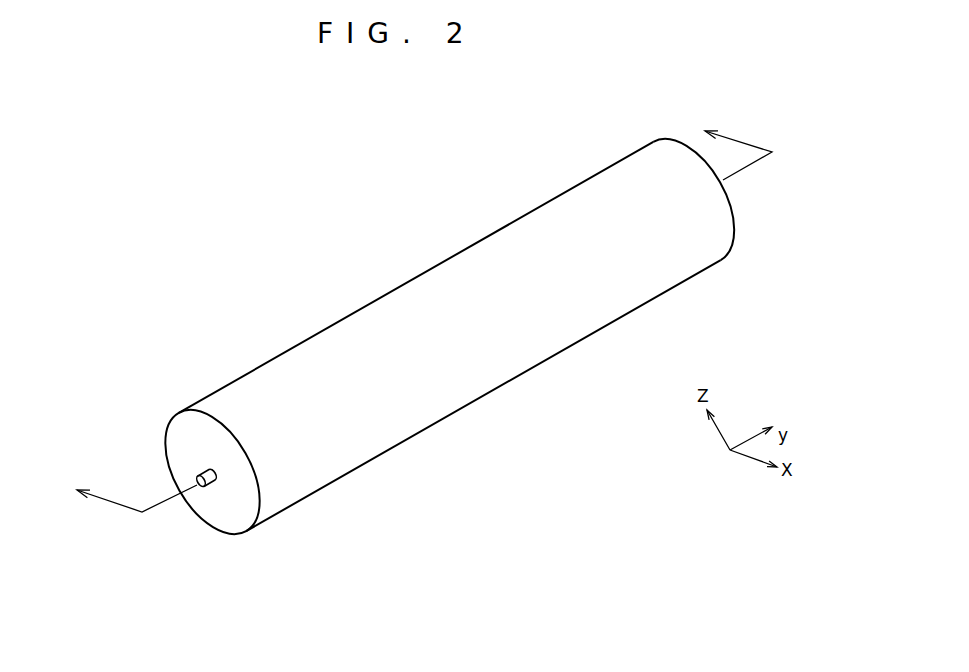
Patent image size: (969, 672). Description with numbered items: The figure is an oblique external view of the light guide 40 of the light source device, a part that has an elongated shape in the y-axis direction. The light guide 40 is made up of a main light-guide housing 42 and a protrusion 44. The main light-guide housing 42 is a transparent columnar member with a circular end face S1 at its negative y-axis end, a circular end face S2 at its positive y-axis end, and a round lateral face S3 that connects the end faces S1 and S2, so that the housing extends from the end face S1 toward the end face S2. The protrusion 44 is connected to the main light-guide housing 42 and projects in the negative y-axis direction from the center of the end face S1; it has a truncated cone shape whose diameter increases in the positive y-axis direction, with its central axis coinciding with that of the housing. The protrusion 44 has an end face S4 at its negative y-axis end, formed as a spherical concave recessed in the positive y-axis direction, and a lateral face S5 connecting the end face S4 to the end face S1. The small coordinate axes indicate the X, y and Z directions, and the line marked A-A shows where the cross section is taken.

The light guide 40 is at (203, 163).
The main light-guide housing 42 is at (427, 278).
The protrusion 44 is at (197, 472).
The end face S1 is at (228, 522).
The end face S2 is at (733, 205).
The lateral face S3 is at (500, 362).
The end face S4 is at (203, 495).
The lateral face S5 is at (215, 474).